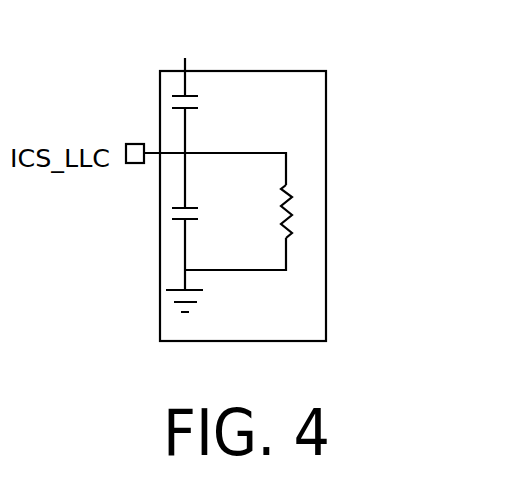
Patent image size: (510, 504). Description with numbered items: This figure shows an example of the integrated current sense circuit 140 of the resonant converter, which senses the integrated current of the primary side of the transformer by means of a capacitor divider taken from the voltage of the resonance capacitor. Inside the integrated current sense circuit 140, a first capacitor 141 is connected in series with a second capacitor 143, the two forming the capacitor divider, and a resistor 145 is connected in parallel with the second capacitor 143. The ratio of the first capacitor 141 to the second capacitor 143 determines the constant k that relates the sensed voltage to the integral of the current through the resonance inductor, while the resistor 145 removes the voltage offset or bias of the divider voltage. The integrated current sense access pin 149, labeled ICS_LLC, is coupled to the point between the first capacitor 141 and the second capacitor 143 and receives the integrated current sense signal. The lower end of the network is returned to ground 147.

The integrated current sense circuit 140 is at (292, 68).
The first capacitor 141 is at (195, 93).
The second capacitor 143 is at (177, 210).
The resistor 145 is at (288, 188).
The ground 147 is at (177, 302).
The integrated current sense access pin 149 is at (137, 143).